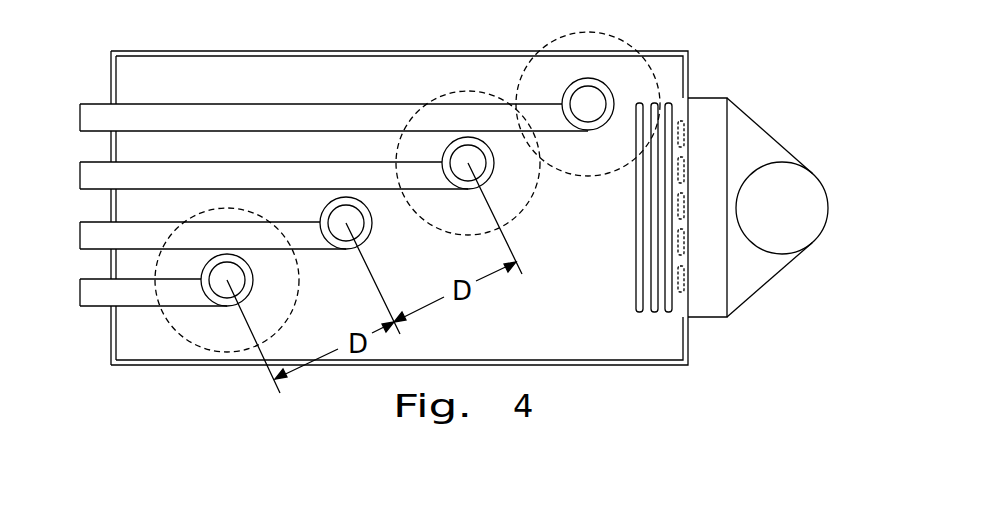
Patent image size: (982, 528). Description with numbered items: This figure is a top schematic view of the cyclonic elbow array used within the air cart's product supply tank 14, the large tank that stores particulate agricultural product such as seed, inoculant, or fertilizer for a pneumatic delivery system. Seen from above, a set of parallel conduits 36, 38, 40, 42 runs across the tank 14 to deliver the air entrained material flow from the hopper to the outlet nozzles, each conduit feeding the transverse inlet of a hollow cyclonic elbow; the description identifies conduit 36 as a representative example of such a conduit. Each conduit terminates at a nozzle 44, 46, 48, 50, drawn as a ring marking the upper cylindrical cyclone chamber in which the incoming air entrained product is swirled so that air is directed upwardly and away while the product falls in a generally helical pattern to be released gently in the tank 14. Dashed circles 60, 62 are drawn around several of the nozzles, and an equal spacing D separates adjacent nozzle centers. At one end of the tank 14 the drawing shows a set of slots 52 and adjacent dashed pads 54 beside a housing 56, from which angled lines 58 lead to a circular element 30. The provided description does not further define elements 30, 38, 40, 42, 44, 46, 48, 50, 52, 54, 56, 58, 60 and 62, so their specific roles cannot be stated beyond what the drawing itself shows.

The product supply tank 14 is at (540, 326).
The cable 30 is at (808, 173).
The conduit 36 is at (100, 306).
The conductive trace 38 is at (157, 225).
The conductive trace 40 is at (245, 168).
The conductive trace 42 is at (100, 108).
The mounting pad 44 is at (249, 292).
The mounting pad 46 is at (369, 232).
The mounting pad 48 is at (491, 172).
The mounting pad 50 is at (573, 80).
The connector contacts 52 is at (639, 275).
The solder pads 54 is at (685, 288).
The connector housing 56 is at (708, 110).
The strain relief 58 is at (750, 282).
The keep-out zone 60 is at (574, 176).
The keep-out zone 62 is at (448, 92).